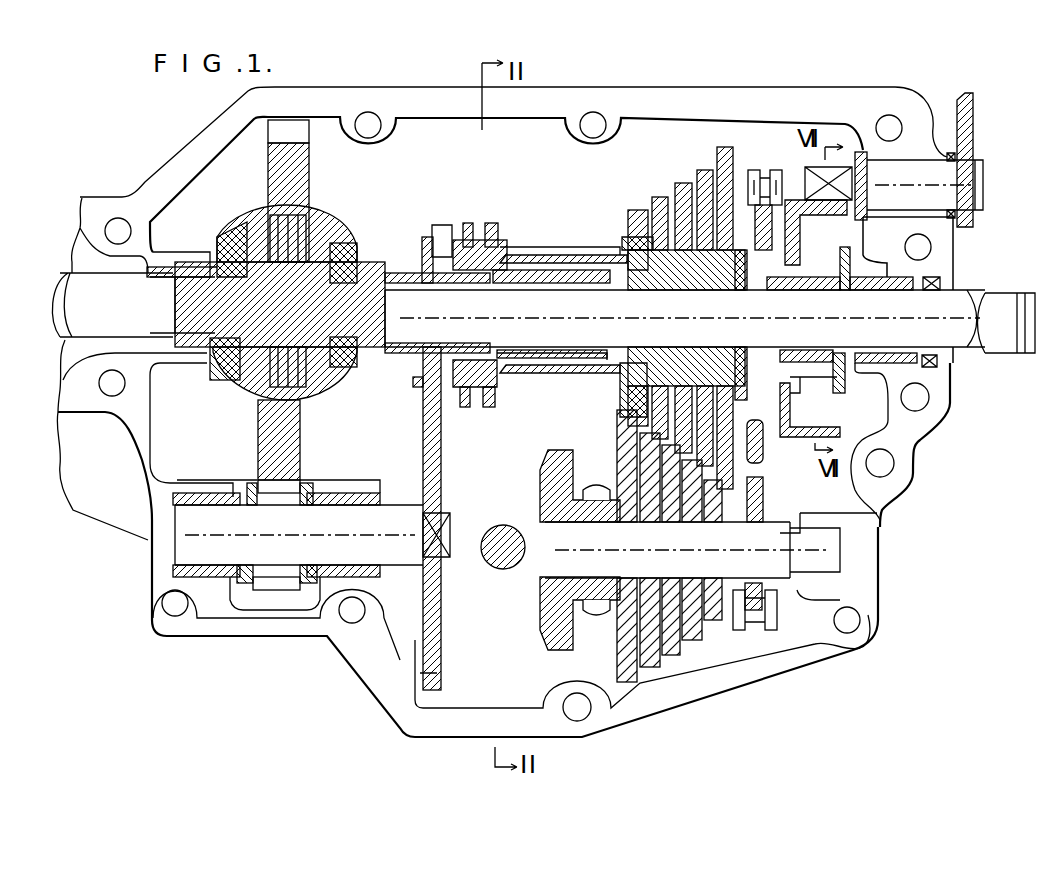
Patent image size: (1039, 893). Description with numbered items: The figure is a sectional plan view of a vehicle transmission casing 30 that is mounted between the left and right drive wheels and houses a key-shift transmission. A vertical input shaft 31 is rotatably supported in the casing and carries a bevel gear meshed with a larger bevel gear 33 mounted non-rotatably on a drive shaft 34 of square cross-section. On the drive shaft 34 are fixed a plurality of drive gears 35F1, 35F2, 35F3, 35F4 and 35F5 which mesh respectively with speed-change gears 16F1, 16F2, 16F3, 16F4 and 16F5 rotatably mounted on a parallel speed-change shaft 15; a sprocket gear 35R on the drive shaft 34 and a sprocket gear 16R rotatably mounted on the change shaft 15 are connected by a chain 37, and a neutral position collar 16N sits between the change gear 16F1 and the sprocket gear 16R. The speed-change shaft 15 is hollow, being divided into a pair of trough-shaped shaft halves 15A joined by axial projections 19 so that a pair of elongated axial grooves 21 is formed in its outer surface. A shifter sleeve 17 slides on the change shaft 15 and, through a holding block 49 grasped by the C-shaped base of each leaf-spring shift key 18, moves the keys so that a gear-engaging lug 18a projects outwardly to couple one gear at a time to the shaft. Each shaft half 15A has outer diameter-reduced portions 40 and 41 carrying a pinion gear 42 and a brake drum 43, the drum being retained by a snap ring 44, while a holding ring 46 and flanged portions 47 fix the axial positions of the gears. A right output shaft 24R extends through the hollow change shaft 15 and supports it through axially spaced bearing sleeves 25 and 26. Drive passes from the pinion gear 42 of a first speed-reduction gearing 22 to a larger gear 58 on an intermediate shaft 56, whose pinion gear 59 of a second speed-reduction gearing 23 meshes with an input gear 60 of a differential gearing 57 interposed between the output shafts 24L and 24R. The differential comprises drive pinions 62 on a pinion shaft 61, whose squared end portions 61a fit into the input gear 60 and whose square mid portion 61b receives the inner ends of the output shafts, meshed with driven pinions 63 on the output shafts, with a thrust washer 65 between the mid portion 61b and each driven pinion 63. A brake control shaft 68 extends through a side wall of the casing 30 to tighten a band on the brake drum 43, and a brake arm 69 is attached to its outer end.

The speed-change shaft 15 is at (579, 398).
The shaft half 15A is at (570, 253).
The speed-change gear 16F1 is at (730, 153).
The speed-change gear 16F2 is at (705, 175).
The speed-change gear 16F3 is at (682, 190).
The speed-change gear 16F4 is at (660, 197).
The speed-change gear 16F5 is at (638, 213).
The neutral position collar 16N is at (740, 390).
The sprocket gear 16R is at (757, 450).
The shifter sleeve 17 is at (463, 227).
The shift key 18 is at (530, 255).
The gear-engaging lug 18a is at (663, 257).
The axial projection 19 is at (543, 277).
The axial groove 21 is at (580, 267).
The first speed-reduction gearing 22 is at (412, 437).
The second speed-reduction gearing 23 is at (238, 472).
The output shaft 24L is at (90, 290).
The output shaft 24R is at (943, 363).
The bearing sleeve 25 is at (470, 273).
The bearing sleeve 26 is at (793, 350).
The transmission casing 30 is at (367, 667).
The input shaft 31 is at (493, 560).
The bevel gear 33 is at (543, 623).
The drive shaft 34 is at (757, 553).
The drive gear 35F1 is at (710, 617).
The drive gear 35F2 is at (717, 640).
The drive gear 35F3 is at (690, 640).
The drive gear 35F4 is at (647, 663).
The drive gear 35F5 is at (623, 677).
The sprocket gear 35R is at (757, 490).
The chain 37 is at (750, 173).
The outer diameter-reduced portion 40 is at (413, 273).
The outer diameter-reduced portion 41 is at (890, 243).
The pinion gear 42 is at (435, 230).
The brake drum 43 is at (913, 440).
The snap ring 44 is at (800, 265).
The holding ring 46 is at (797, 407).
The flanged portion 47 is at (627, 237).
The holding block 49 is at (483, 230).
The intermediate shaft 56 is at (217, 577).
The differential gearing 57 is at (244, 208).
The larger gear 58 is at (412, 733).
The pinion gear 59 is at (280, 580).
The input gear 60 is at (297, 127).
The pinion shaft 61 is at (273, 387).
The squared end portion 61a is at (273, 167).
The mid portion 61b is at (283, 267).
The drive pinion 62 is at (325, 230).
The driven pinion 63 is at (213, 247).
The thrust washer 65 is at (227, 293).
The brake control shaft 68 is at (910, 177).
The brake arm 69 is at (977, 120).